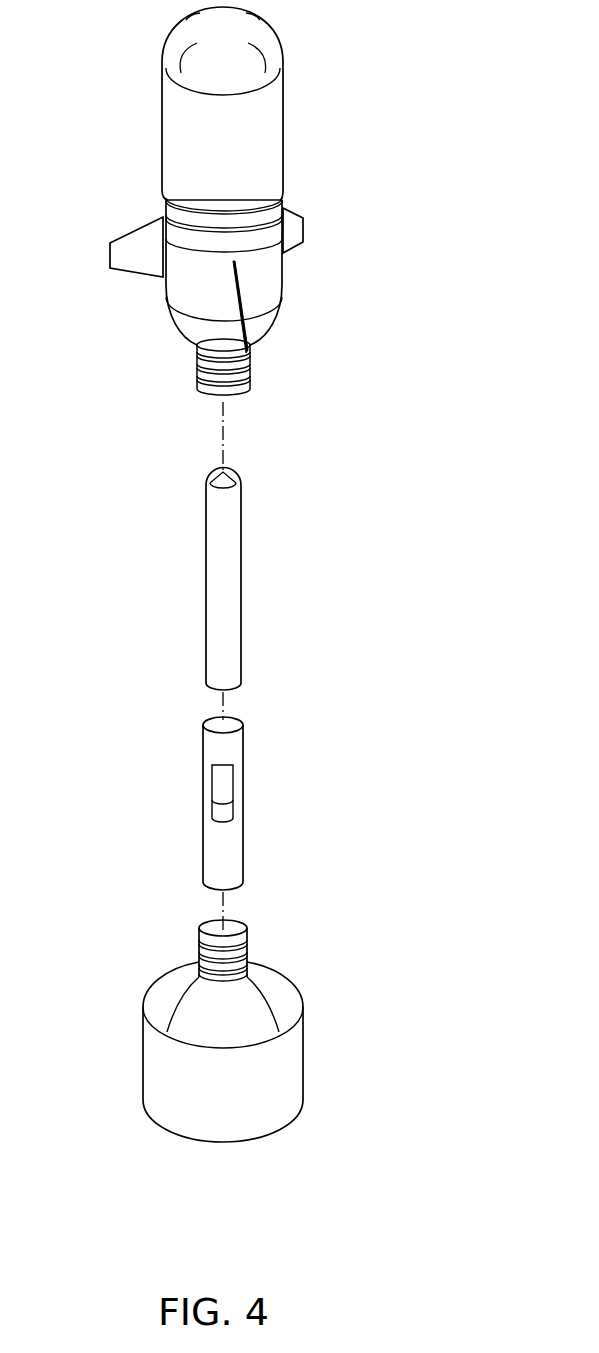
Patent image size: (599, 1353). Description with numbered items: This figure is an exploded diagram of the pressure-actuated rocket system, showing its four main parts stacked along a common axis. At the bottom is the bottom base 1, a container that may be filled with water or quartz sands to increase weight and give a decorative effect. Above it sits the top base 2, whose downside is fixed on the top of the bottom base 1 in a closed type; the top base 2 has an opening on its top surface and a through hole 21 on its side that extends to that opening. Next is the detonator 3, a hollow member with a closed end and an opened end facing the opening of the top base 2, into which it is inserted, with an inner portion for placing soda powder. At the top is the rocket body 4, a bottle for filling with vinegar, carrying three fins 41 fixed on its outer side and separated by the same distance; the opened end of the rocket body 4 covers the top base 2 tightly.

The bottom base 1 is at (278, 1077).
The top base 2 is at (291, 803).
The through hole 21 is at (222, 785).
The detonator 3 is at (227, 583).
The rocket body 4 is at (279, 201).
The fins 41 is at (250, 312).